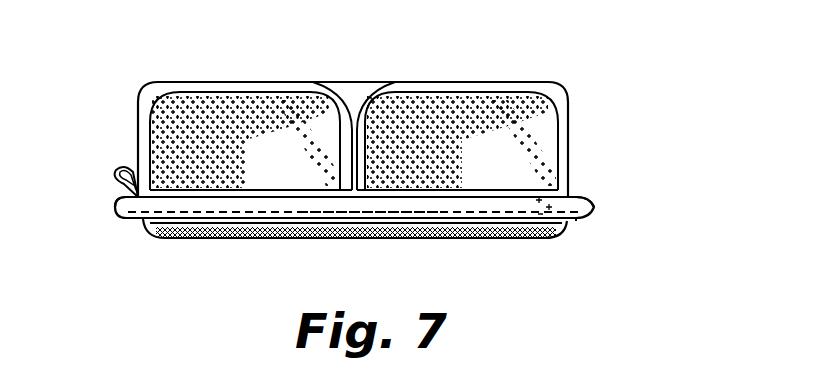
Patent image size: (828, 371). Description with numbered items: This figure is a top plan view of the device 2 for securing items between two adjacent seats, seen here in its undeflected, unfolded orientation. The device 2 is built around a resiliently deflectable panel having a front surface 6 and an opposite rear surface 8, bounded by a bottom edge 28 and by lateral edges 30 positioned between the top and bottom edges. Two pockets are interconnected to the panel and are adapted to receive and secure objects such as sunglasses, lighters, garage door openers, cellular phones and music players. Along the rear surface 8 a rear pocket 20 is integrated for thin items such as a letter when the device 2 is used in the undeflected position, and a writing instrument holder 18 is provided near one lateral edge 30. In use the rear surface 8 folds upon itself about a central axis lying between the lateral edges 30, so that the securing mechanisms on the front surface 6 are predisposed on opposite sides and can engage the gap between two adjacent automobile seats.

The device 2 is at (586, 62).
The front surface 6 is at (585, 195).
The rear surface 8 is at (577, 219).
The writing instrument holder 18 is at (115, 168).
The rear pocket 20 is at (490, 238).
The bottom edge 28 is at (370, 210).
The lateral edge 30 is at (113, 213).